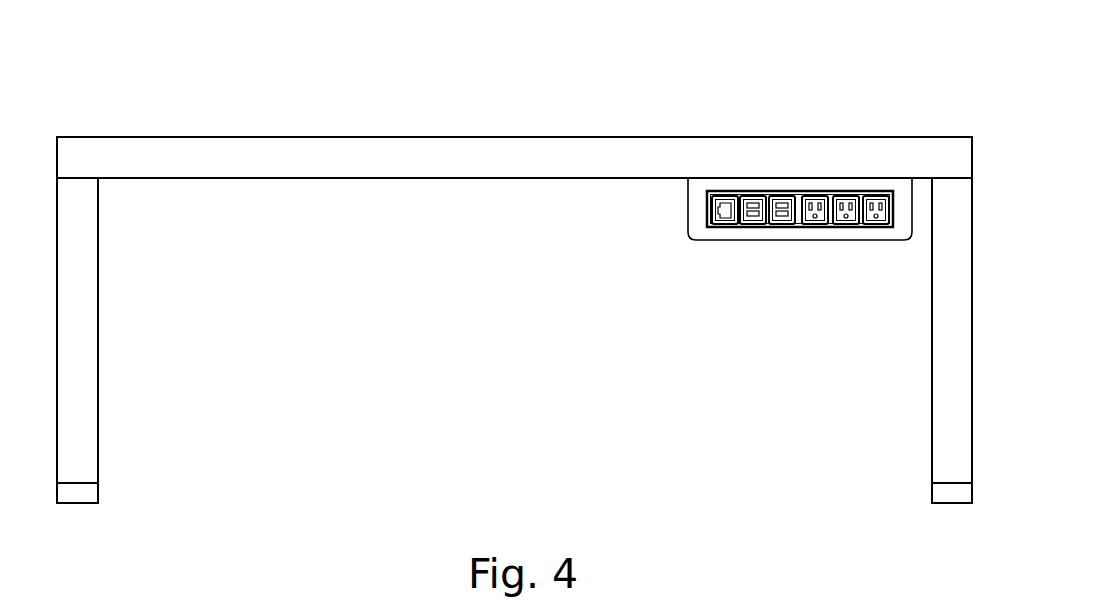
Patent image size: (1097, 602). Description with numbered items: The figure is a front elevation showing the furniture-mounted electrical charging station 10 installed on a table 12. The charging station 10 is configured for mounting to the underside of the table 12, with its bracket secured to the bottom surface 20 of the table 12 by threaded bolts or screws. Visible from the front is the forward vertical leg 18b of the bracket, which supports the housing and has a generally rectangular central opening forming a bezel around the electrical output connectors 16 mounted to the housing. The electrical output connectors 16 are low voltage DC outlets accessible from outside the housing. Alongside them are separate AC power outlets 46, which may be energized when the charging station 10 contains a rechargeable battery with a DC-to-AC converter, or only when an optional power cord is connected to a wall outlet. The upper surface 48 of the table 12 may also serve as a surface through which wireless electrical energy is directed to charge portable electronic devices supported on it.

The table 12 is at (755, 48).
The upper surface of table 48 is at (462, 134).
The bottom surface of table 20 is at (457, 181).
The forward vertical leg 18b is at (690, 215).
The electrical output connectors 16 is at (727, 230).
The AC power outlets 46 is at (818, 230).
The furniture-mounted electrical charging station 10 is at (816, 357).